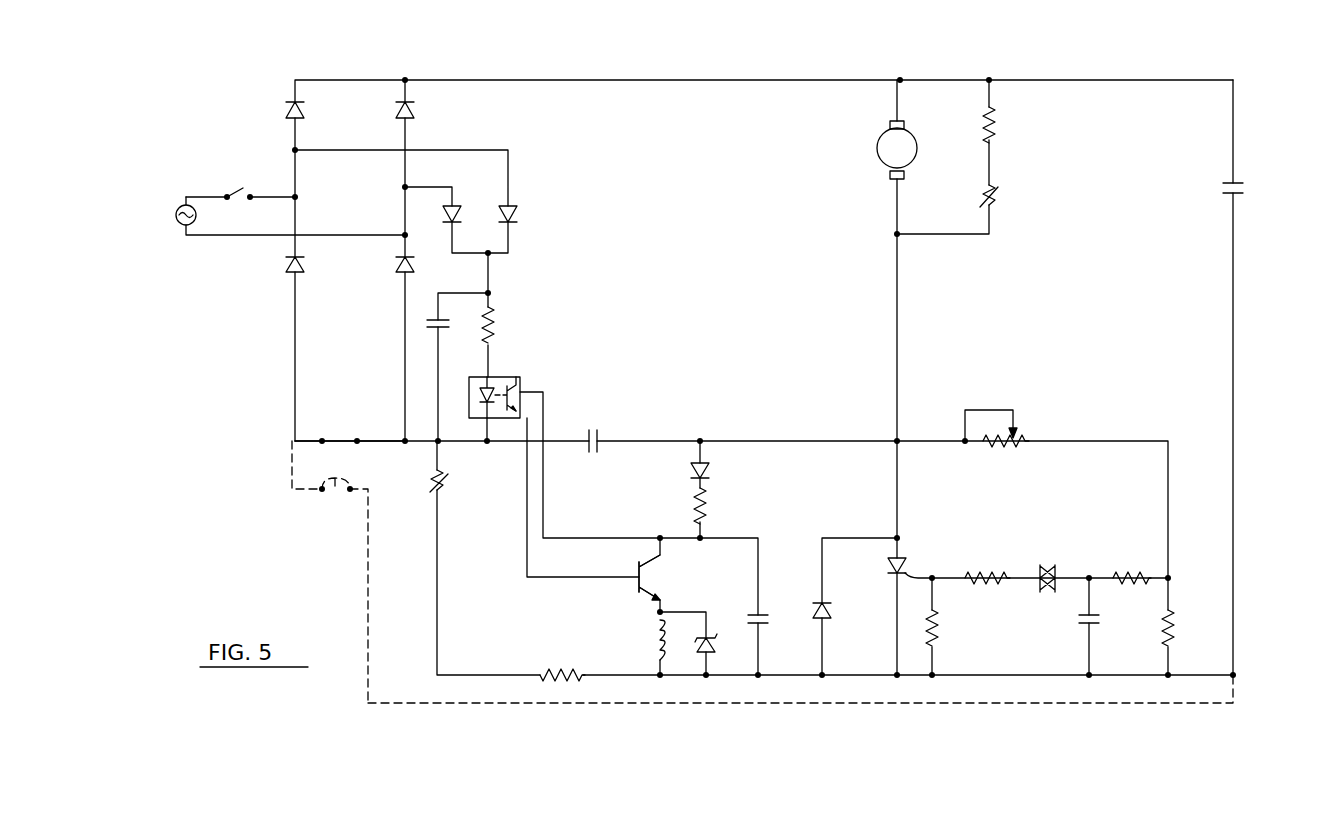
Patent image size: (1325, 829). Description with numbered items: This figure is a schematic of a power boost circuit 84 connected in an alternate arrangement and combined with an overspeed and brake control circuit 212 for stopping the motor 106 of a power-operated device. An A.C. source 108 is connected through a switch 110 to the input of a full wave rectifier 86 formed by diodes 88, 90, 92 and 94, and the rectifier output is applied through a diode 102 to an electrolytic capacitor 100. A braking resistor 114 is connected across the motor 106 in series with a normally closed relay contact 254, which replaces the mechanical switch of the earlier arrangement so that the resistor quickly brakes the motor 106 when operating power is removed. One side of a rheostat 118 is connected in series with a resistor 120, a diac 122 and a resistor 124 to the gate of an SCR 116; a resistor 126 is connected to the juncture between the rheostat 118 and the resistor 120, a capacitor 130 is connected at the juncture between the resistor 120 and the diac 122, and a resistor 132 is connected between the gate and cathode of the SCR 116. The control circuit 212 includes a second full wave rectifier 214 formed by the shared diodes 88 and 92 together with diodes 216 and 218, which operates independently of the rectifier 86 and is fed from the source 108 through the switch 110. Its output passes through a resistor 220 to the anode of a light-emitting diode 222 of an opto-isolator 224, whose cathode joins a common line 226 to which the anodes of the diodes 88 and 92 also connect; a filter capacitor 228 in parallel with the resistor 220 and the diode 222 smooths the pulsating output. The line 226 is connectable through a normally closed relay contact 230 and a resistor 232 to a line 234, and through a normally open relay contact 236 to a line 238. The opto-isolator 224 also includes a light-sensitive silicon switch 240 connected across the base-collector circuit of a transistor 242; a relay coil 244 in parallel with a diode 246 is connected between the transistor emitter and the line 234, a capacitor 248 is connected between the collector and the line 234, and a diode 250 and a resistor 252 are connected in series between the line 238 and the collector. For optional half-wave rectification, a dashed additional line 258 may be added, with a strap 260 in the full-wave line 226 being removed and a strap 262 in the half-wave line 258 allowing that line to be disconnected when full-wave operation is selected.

The power boost circuit 84 is at (1243, 482).
The full wave rectifier 86 is at (280, 358).
The diode 88 is at (290, 270).
The diode 90 is at (290, 108).
The diode 92 is at (402, 270).
The diode 94 is at (412, 110).
The electrolytic capacitor 100 is at (1238, 186).
The diode 102 is at (830, 612).
The motor 106 is at (880, 156).
The A.C. source 108 is at (180, 222).
The switch 110 is at (243, 188).
The braking resistor 114 is at (995, 115).
The SCR 116 is at (900, 562).
The rheostat 118 is at (1022, 438).
The resistor 120 is at (1128, 570).
The diac 122 is at (1045, 560).
The resistor 124 is at (978, 575).
The resistor 126 is at (1160, 625).
The capacitor 130 is at (1082, 622).
The resistor 132 is at (940, 625).
The overspeed and brake control circuit 212 is at (655, 712).
The full wave rectifier 214 is at (542, 185).
The diode 216 is at (458, 212).
The diode 218 is at (514, 212).
The resistor 220 is at (498, 333).
The light-emitting diode 222 is at (482, 410).
The opto-isolator 224 is at (535, 365).
The common line 226 is at (415, 445).
The filter capacitor 228 is at (430, 330).
The normally closed relay contact 230 is at (448, 485).
The resistor 232 is at (548, 685).
The line 234 is at (602, 685).
The normally open relay contact 236 is at (582, 425).
The line 238 is at (785, 445).
The light-sensitive silicon switch 240 is at (507, 410).
The transistor 242 is at (640, 592).
The relay coil 244 is at (665, 640).
The diode 246 is at (710, 640).
The capacitor 248 is at (765, 615).
The diode 250 is at (706, 470).
The resistor 252 is at (695, 505).
The normally closed relay contact 254 is at (998, 205).
The additional line 258 is at (870, 712).
The strap 260 is at (340, 438).
The strap 262 is at (333, 497).